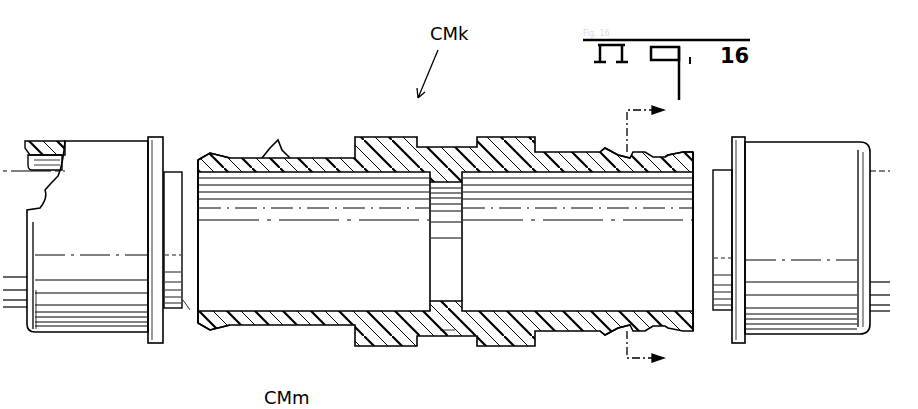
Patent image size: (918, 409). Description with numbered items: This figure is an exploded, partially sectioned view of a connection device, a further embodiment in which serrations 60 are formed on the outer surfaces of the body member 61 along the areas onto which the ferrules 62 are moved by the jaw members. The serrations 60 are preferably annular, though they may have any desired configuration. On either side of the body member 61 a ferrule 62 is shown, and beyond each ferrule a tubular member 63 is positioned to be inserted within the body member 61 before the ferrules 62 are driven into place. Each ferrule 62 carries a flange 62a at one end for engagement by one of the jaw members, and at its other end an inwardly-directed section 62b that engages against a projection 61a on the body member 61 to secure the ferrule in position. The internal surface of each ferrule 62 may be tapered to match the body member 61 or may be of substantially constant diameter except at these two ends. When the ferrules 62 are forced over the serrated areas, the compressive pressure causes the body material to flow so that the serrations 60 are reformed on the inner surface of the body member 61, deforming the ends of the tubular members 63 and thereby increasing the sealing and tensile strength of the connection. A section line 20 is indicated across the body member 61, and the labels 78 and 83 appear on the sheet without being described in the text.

The section line 20- 20 is at (653, 234).
The serrations 60 is at (270, 158).
The body member 61 is at (397, 344).
The projections 61a is at (208, 325).
The ferrules 62 is at (75, 328).
The flanges 62a is at (157, 137).
The inwardly-directed sections 62b is at (26, 170).
The tubular members 63 is at (172, 316).
The coupling assembly 78 is at (455, 369).
The conduit end 83 is at (188, 400).